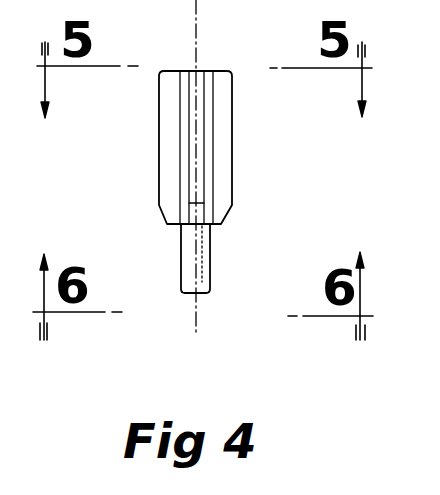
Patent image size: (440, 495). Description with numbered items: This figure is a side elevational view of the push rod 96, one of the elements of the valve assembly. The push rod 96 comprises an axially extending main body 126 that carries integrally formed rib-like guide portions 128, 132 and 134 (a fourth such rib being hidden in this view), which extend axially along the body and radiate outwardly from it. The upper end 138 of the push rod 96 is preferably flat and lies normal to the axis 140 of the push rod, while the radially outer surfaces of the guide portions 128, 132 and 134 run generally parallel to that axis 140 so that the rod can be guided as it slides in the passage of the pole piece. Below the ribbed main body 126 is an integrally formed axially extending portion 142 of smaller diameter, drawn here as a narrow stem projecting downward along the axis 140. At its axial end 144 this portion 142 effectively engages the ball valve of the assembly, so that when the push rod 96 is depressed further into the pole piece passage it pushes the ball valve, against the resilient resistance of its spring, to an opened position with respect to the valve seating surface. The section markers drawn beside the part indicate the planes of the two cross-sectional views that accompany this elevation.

The push rod 96 is at (263, 173).
The main body 126 is at (178, 162).
The guide portion 128 is at (159, 125).
The guide portion 132 is at (232, 142).
The guide portion 134 is at (204, 191).
The upper end 138 is at (208, 70).
The axis 140 is at (193, 44).
The axially extending portion 142 is at (210, 270).
The axial end 144 is at (192, 294).